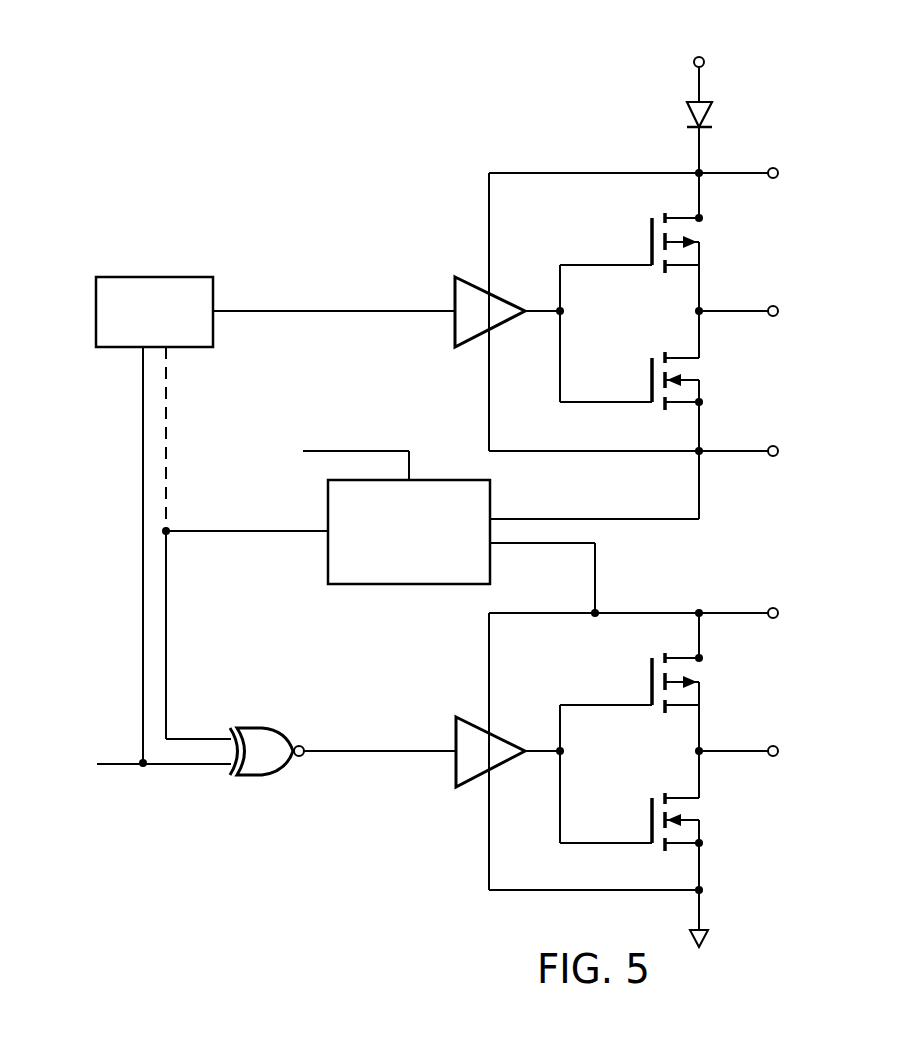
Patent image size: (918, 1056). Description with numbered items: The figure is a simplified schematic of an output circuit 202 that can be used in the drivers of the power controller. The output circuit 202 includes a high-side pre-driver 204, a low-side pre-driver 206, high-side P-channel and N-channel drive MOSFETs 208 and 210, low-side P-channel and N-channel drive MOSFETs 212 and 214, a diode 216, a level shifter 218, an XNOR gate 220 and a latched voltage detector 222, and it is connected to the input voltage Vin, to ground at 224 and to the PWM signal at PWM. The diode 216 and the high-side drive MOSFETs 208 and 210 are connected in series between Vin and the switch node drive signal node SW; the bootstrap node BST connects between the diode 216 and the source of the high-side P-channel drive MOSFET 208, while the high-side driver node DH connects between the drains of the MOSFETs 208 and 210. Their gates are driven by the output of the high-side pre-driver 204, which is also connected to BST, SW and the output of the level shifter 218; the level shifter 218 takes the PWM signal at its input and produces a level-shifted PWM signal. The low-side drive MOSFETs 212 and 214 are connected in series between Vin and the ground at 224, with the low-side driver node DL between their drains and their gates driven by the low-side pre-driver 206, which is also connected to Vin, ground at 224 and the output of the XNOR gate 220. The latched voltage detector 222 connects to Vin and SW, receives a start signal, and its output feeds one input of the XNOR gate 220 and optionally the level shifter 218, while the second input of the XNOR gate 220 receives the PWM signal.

The output circuit 202 is at (254, 66).
The high-side pre-driver 204 is at (454, 296).
The low-side pre-driver 206 is at (454, 768).
The high-side P-channel drive MOSFET 208 is at (650, 230).
The high-side N-channel drive MOSFET 210 is at (650, 370).
The low-side P-channel drive MOSFET 212 is at (650, 670).
The low-side N-channel drive MOSFET 214 is at (650, 810).
The diode 216 is at (708, 118).
The level shifter 218 is at (152, 277).
The XNOR gate 220 is at (252, 776).
The latched voltage detector 222 is at (397, 584).
The ground 224 is at (705, 939).